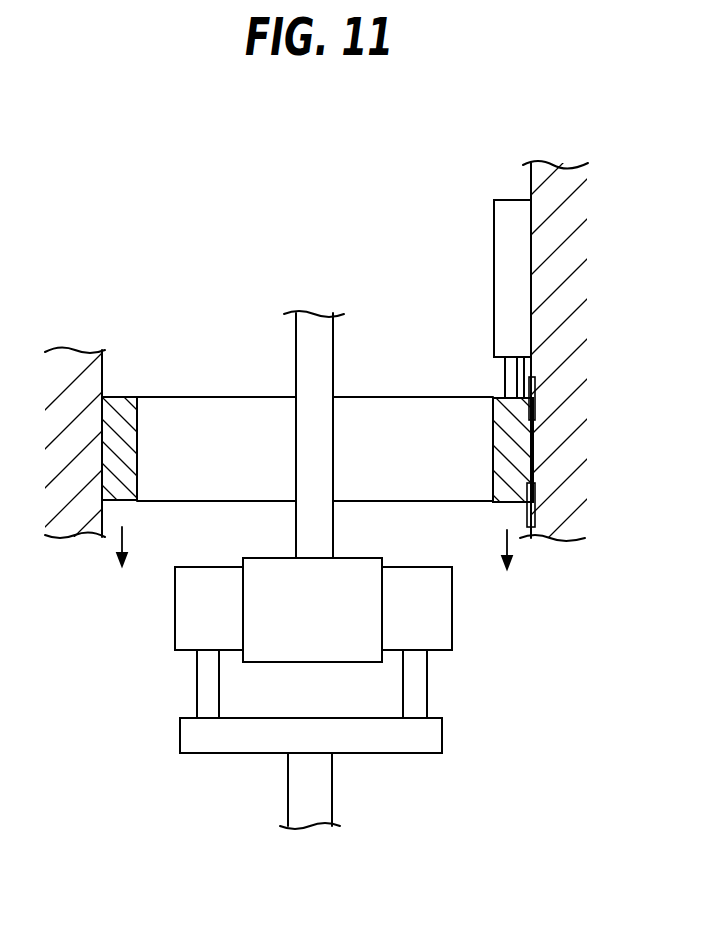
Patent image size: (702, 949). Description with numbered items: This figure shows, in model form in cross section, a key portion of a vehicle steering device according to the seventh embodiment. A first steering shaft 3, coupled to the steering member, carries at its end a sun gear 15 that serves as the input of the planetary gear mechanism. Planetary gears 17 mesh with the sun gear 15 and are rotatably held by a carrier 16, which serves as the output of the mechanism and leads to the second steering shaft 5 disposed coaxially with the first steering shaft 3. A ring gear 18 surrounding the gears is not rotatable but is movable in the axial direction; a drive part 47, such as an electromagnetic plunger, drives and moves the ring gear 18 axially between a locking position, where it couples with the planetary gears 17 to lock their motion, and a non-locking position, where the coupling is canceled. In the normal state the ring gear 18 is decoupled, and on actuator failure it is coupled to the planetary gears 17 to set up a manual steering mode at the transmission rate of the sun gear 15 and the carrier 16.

The first steering shaft 3 is at (297, 362).
The second steering shaft 5 is at (298, 797).
The sun gear 15 is at (305, 645).
The carrier 16 is at (442, 735).
The planetary gears 17 is at (176, 608).
The ring gear 18 is at (121, 390).
The drive part 47 is at (494, 283).